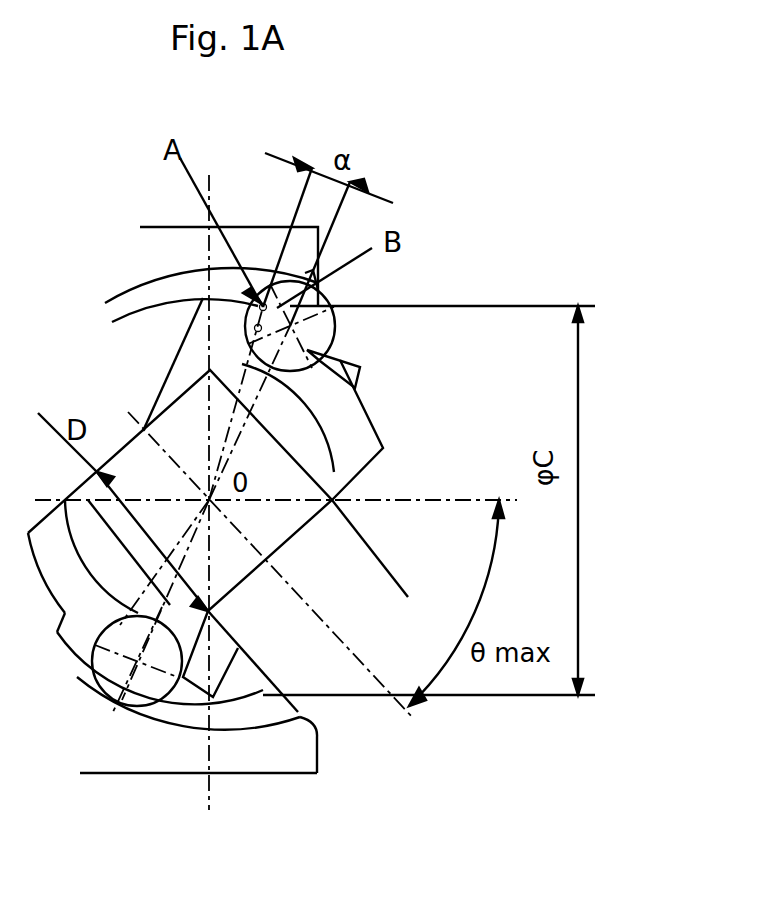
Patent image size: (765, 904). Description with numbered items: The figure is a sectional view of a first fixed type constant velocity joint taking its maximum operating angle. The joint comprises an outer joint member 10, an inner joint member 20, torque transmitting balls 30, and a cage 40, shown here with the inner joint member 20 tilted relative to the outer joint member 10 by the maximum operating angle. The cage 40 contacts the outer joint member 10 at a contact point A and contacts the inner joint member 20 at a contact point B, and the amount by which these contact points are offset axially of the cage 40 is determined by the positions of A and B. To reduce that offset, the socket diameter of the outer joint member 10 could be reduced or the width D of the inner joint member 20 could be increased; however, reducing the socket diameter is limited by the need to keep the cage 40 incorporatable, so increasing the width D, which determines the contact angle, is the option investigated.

The outer joint member 10 is at (158, 242).
The inner joint member 20 is at (363, 430).
The torque transmitting balls 30 is at (333, 320).
The cage 40 is at (358, 372).